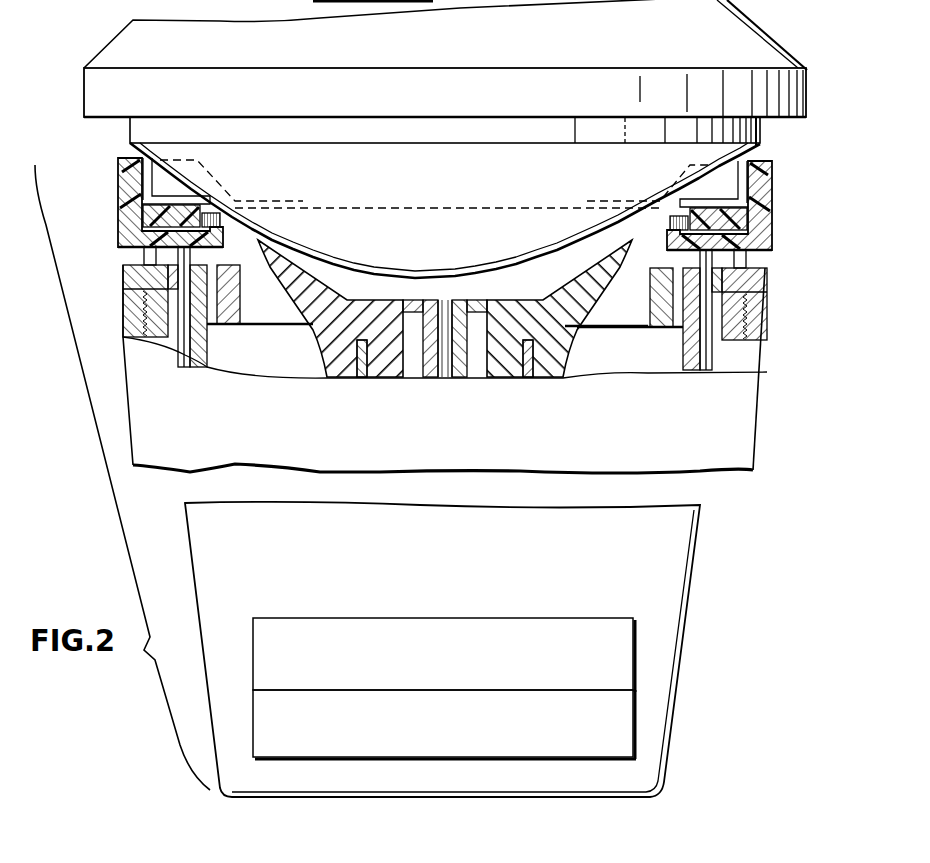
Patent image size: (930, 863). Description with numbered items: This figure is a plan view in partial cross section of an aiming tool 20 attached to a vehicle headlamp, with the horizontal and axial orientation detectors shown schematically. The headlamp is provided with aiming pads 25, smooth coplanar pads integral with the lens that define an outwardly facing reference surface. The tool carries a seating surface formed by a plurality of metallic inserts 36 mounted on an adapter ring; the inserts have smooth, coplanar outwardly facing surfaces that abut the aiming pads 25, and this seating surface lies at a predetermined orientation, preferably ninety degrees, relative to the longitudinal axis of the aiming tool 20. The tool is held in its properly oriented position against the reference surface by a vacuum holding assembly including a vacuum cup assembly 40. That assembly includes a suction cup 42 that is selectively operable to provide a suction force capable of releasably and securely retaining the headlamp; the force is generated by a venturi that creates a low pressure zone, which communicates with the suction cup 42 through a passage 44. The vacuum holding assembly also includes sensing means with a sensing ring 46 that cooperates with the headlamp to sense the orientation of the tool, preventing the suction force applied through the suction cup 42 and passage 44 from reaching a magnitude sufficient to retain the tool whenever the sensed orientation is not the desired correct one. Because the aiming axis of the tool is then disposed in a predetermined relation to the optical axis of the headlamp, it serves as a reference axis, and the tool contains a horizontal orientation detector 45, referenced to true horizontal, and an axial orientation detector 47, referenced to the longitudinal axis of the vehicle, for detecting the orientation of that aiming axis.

The aiming tool 20 is at (461, 442).
The aiming pads 25 is at (160, 183).
The metallic inserts 36 is at (188, 203).
The vacuum cup assembly 40 is at (329, 283).
The suction cup 42 is at (287, 288).
The passage 44 is at (445, 301).
The horizontal orientation detector 45 is at (636, 637).
The sensing ring 46 is at (118, 196).
The axial orientation detector 47 is at (636, 704).